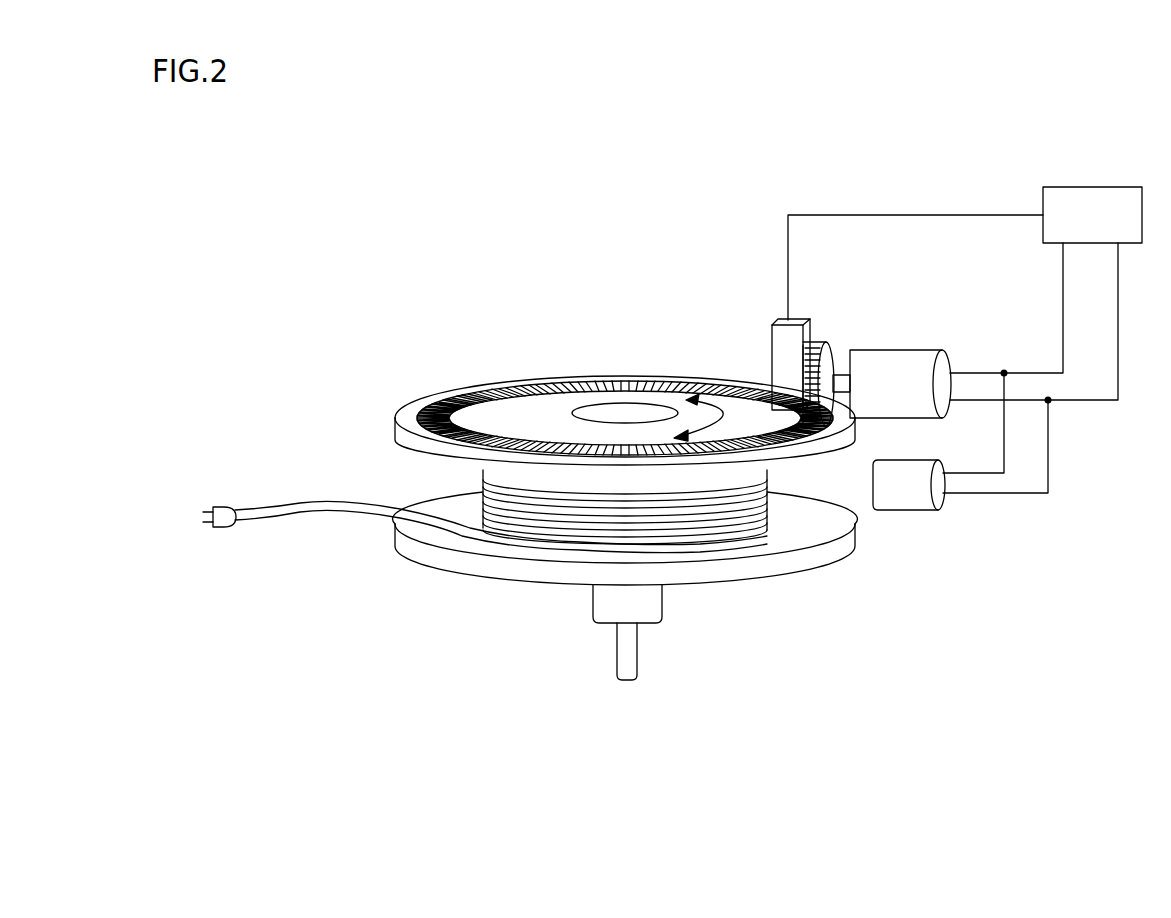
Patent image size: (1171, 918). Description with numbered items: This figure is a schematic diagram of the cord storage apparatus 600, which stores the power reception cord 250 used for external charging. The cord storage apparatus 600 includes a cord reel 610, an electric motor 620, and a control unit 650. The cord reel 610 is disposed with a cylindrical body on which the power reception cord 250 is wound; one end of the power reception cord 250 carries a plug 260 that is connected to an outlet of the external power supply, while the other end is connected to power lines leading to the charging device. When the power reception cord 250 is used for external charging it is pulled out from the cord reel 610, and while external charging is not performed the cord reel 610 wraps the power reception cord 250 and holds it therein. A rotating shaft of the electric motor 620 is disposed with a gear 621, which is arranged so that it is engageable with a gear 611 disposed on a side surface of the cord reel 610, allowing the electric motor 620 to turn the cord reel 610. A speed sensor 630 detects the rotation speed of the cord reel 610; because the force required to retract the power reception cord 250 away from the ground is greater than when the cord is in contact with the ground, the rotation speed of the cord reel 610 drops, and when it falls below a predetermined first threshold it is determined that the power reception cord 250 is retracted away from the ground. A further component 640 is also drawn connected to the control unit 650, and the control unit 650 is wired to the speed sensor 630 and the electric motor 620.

The cord storage apparatus 600 is at (952, 110).
The cord reel 610 is at (764, 583).
The gear 611 is at (526, 390).
The electric motor 620 is at (921, 351).
The gear 621 is at (834, 347).
The speed sensor 630 is at (801, 322).
The second motor/sensor 640 is at (919, 461).
The control unit 650 is at (1108, 187).
The power reception cord 250 is at (315, 514).
The plug 260 is at (225, 506).